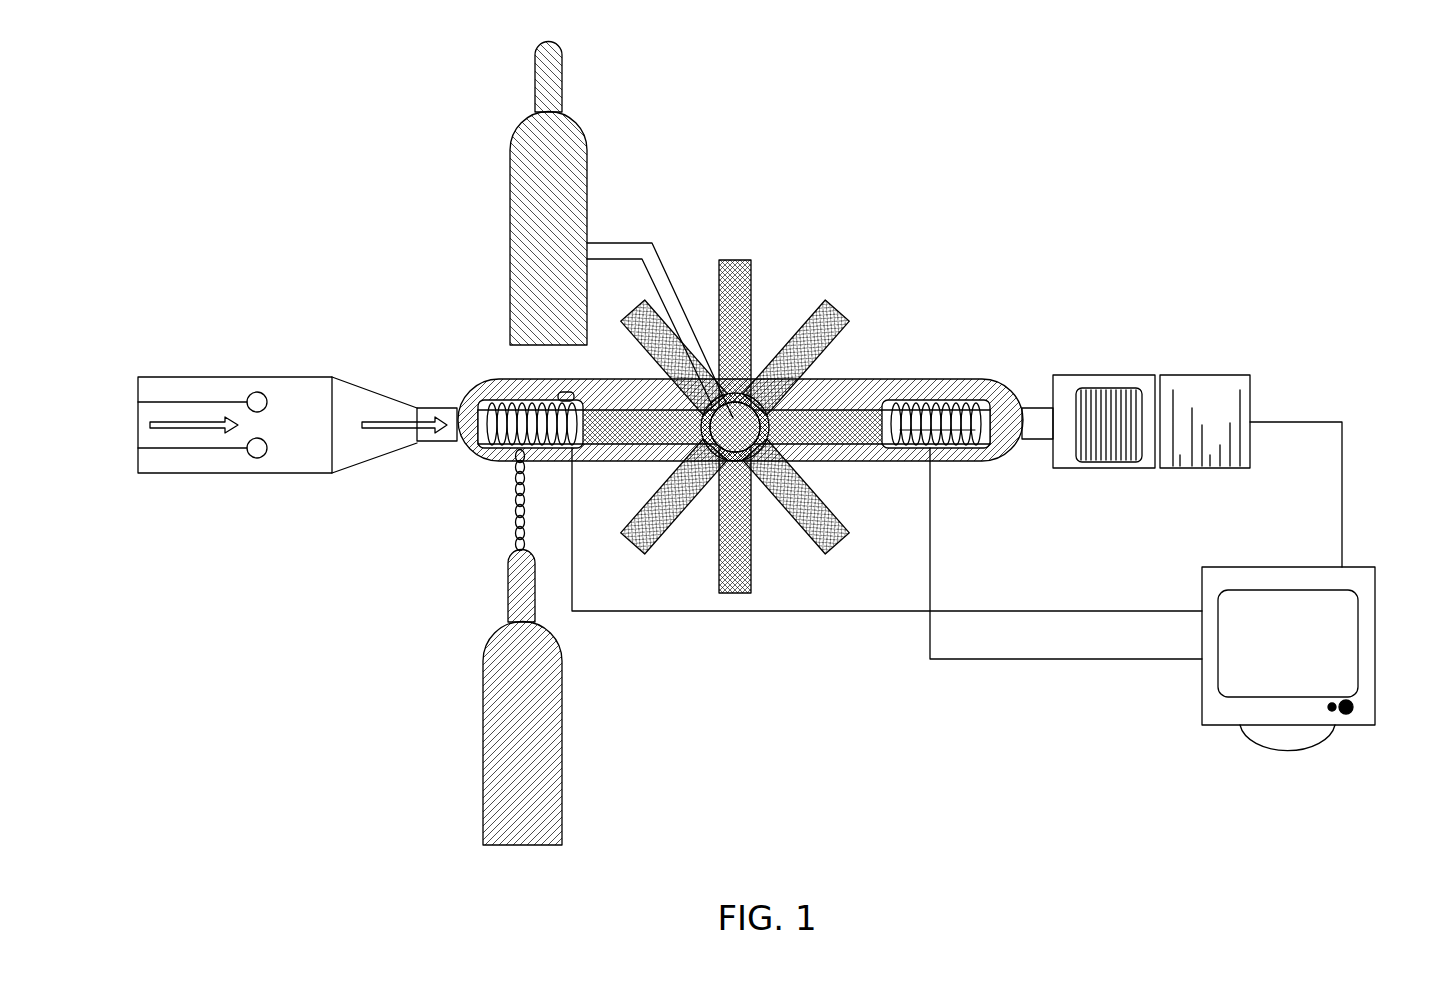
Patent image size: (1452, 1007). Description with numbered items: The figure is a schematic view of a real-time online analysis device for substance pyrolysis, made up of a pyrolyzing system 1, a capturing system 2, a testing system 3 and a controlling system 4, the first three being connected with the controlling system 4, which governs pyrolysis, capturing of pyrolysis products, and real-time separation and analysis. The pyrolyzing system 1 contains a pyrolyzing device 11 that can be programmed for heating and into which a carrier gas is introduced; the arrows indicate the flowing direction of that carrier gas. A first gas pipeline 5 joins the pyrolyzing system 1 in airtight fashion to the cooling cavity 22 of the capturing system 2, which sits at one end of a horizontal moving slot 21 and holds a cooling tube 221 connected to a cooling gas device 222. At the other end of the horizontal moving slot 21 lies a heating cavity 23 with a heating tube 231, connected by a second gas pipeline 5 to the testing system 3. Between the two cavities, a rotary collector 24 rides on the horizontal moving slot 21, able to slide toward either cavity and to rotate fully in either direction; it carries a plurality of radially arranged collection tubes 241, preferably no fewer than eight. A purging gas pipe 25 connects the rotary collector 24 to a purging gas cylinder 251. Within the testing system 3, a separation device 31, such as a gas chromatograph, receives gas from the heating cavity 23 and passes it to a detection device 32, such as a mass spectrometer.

The pyrolyzing system 1 is at (268, 380).
The pyrolyzing device 11 is at (264, 440).
The capturing system 2 is at (705, 444).
The horizontal moving slot 21 is at (860, 462).
The cooling cavity 22 is at (482, 450).
The cooling tube 221 is at (494, 430).
The cooling gas device 222 is at (493, 710).
The heating cavity 23 is at (975, 448).
The heating tube 231 is at (957, 432).
The rotary collector 24 is at (766, 424).
The collection tube 241 is at (828, 530).
The purging gas pipe 25 is at (647, 250).
The purging gas cylinder 251 is at (532, 197).
The testing system 3 is at (1151, 327).
The separation device 31 is at (1104, 390).
The detection device 32 is at (1210, 398).
The controlling system 4 is at (1310, 640).
The gas pipeline 5 is at (432, 412).